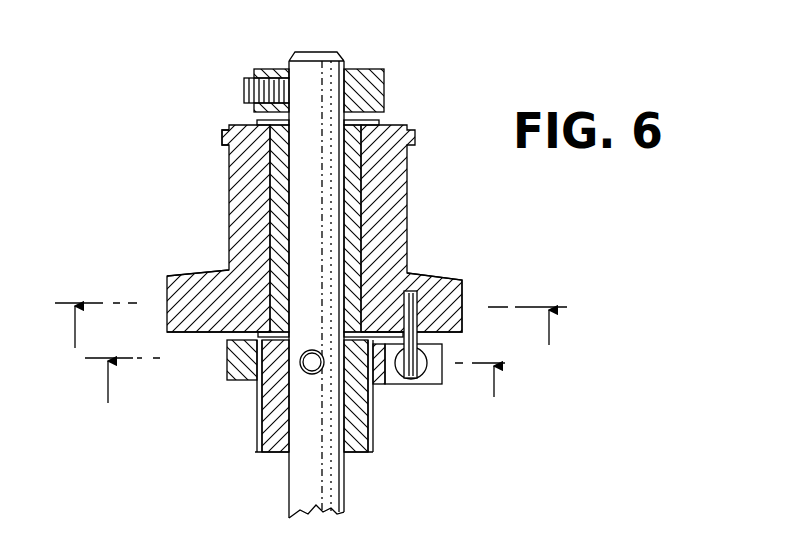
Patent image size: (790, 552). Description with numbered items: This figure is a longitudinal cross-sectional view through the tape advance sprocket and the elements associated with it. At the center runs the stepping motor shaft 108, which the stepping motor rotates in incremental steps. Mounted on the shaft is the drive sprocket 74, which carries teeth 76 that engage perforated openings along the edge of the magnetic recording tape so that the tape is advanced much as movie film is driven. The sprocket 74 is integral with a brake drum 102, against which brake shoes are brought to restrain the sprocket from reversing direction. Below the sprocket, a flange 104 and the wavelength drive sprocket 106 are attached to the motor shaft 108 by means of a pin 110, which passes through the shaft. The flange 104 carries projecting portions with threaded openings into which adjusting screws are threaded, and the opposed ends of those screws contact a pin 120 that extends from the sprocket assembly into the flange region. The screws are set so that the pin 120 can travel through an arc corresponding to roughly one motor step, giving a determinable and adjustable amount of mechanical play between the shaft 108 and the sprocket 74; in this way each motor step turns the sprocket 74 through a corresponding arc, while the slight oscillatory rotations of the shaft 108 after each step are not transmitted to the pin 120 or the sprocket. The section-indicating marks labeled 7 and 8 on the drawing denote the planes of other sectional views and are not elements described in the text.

The stepping motor shaft 108 is at (328, 62).
The teeth 76 is at (222, 135).
The drive sprocket 74 is at (237, 199).
The brake drum 102 is at (192, 307).
The pin 120 is at (418, 302).
The pin 110 is at (302, 370).
The wavelength drive sprocket 106 is at (257, 432).
The flange 104 is at (436, 384).
The section line 7 is at (295, 394).
The section line 8 is at (311, 338).